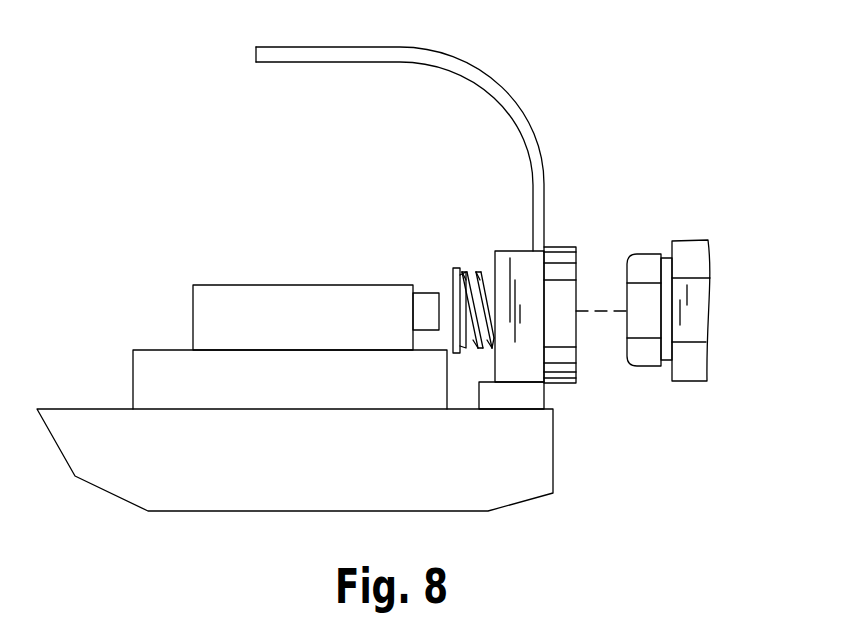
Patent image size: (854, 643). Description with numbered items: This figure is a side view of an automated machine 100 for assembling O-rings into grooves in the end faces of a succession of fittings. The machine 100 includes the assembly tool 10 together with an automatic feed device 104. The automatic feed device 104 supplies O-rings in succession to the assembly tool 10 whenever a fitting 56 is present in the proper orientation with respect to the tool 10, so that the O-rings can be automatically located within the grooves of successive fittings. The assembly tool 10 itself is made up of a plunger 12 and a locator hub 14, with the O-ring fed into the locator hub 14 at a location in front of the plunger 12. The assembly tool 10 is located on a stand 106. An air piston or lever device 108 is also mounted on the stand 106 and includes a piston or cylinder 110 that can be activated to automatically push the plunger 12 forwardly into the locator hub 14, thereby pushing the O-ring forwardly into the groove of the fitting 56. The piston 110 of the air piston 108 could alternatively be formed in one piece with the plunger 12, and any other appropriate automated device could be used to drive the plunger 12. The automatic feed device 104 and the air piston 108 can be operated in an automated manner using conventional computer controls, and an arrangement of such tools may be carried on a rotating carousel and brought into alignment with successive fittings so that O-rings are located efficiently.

The machine 100 is at (146, 202).
The automatic feed device 104 is at (485, 87).
The stand 106 is at (510, 488).
The air piston or lever device 108 is at (287, 300).
The piston or cylinder 110 is at (425, 293).
The plunger 12 is at (455, 268).
The assembly tool 10 is at (565, 240).
The locator hub 14 is at (560, 385).
The fitting 56 is at (692, 252).